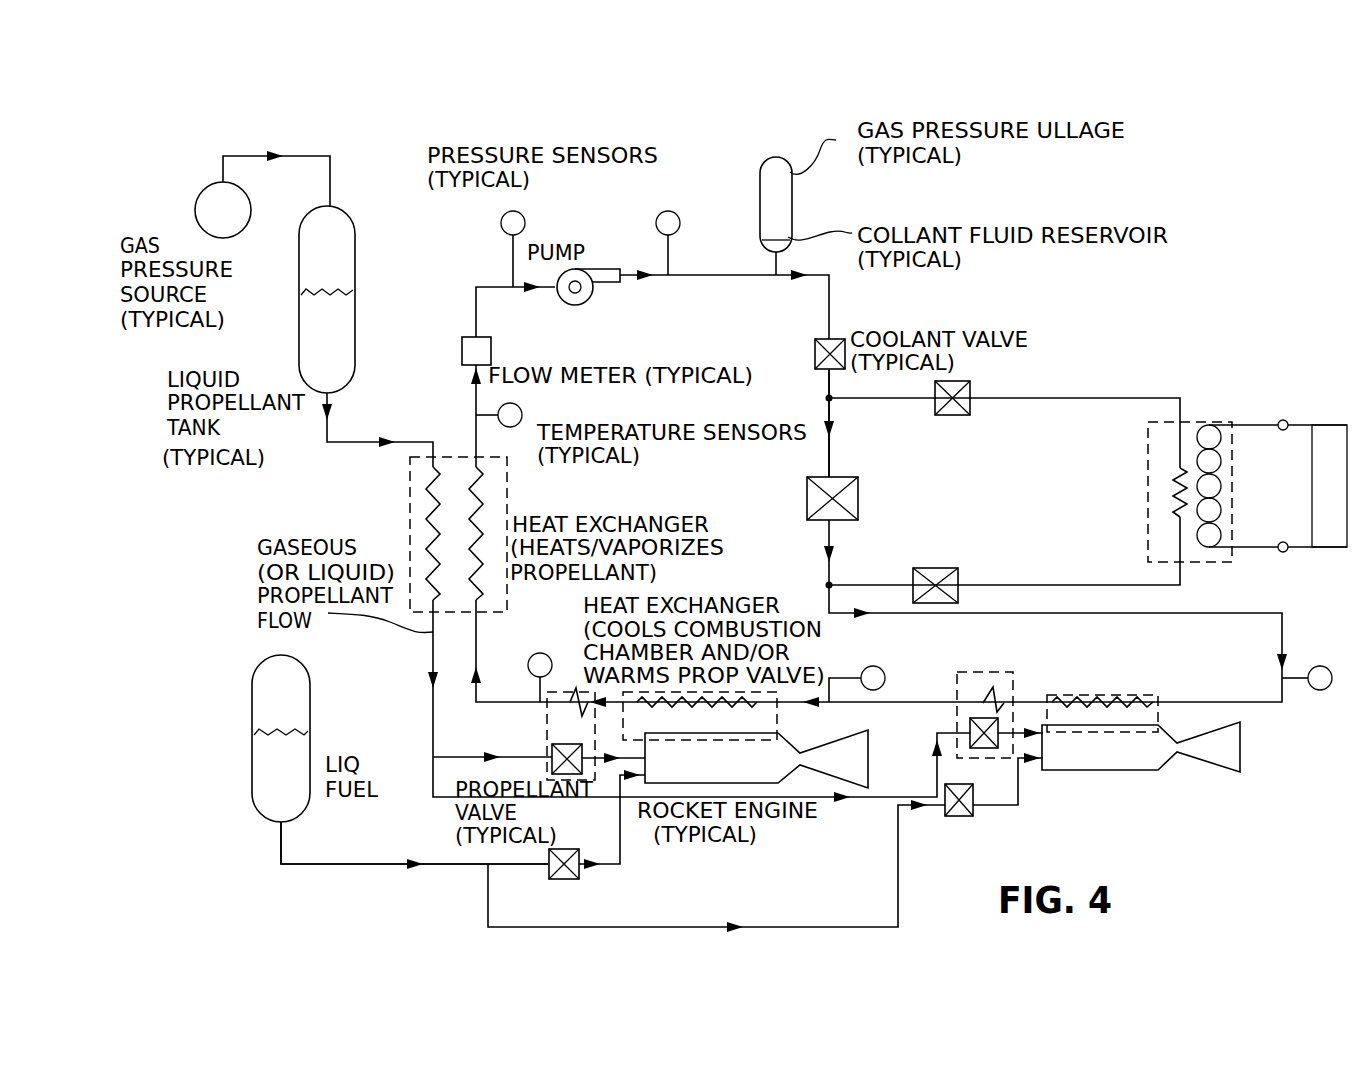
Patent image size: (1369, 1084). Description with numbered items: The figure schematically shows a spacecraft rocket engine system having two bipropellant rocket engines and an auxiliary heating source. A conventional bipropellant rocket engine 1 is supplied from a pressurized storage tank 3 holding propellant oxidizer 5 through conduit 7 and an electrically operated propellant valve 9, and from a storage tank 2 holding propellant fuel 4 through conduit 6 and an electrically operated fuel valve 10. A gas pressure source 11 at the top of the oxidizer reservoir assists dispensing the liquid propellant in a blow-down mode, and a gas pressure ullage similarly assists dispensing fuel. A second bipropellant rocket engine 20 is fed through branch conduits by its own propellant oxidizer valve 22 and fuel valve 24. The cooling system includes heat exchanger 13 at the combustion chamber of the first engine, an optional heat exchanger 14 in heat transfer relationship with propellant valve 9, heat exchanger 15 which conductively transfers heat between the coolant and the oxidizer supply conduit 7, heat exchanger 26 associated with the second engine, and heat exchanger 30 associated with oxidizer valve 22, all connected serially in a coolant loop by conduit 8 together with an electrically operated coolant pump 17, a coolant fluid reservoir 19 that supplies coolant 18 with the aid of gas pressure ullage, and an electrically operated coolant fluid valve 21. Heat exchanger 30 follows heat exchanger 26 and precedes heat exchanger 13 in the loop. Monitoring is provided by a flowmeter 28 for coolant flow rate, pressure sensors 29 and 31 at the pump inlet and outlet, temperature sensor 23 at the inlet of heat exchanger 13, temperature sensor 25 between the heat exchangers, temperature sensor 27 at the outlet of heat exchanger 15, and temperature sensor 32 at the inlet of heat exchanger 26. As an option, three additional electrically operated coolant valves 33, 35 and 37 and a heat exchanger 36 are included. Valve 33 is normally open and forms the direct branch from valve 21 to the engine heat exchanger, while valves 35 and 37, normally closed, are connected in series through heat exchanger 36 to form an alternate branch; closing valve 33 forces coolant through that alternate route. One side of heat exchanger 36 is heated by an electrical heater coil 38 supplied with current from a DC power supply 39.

The bipropellant rocket engine 1 is at (884, 767).
The fuel storage tank 2 is at (252, 720).
The propellant oxidizer storage tank 3 is at (355, 252).
The propellant fuel 4 is at (293, 780).
The propellant oxidizer 5 is at (349, 347).
The fuel conduit 6 is at (337, 865).
The oxidizer conduit 7 is at (417, 442).
The coolant conduit 8 is at (829, 437).
The propellant valve 9 is at (551, 745).
The fuel valve 10 is at (560, 879).
The gas pressure source 11 is at (196, 206).
The heat exchanger 13 is at (743, 693).
The heat exchanger 14 is at (545, 720).
The heat exchanger 15 is at (507, 505).
The coolant pump 17 is at (606, 268).
The coolant fluid 18 is at (790, 232).
The coolant fluid reservoir 19 is at (760, 217).
The second bipropellant rocket engine 20 is at (1240, 770).
The coolant fluid valve 21 is at (815, 360).
The propellant oxidizer valve 22 is at (977, 749).
The temperature sensor 23 is at (885, 676).
The fuel valve 24 is at (957, 816).
The temperature sensor 25 is at (528, 660).
The heat exchanger 26 is at (1097, 695).
The temperature sensor 27 is at (522, 418).
The flowmeter 28 is at (466, 337).
The pressure sensor 29 is at (501, 221).
The heat exchanger 30 is at (987, 672).
The pressure sensor 31 is at (668, 211).
The temperature sensor 32 is at (1322, 666).
The coolant valve 33 is at (858, 485).
The coolant valve 35 is at (967, 415).
The heat exchanger 36 is at (1200, 422).
The coolant valve 37 is at (948, 568).
The electrical heater coil 38 is at (1230, 500).
The DC power supply 39 is at (1340, 498).